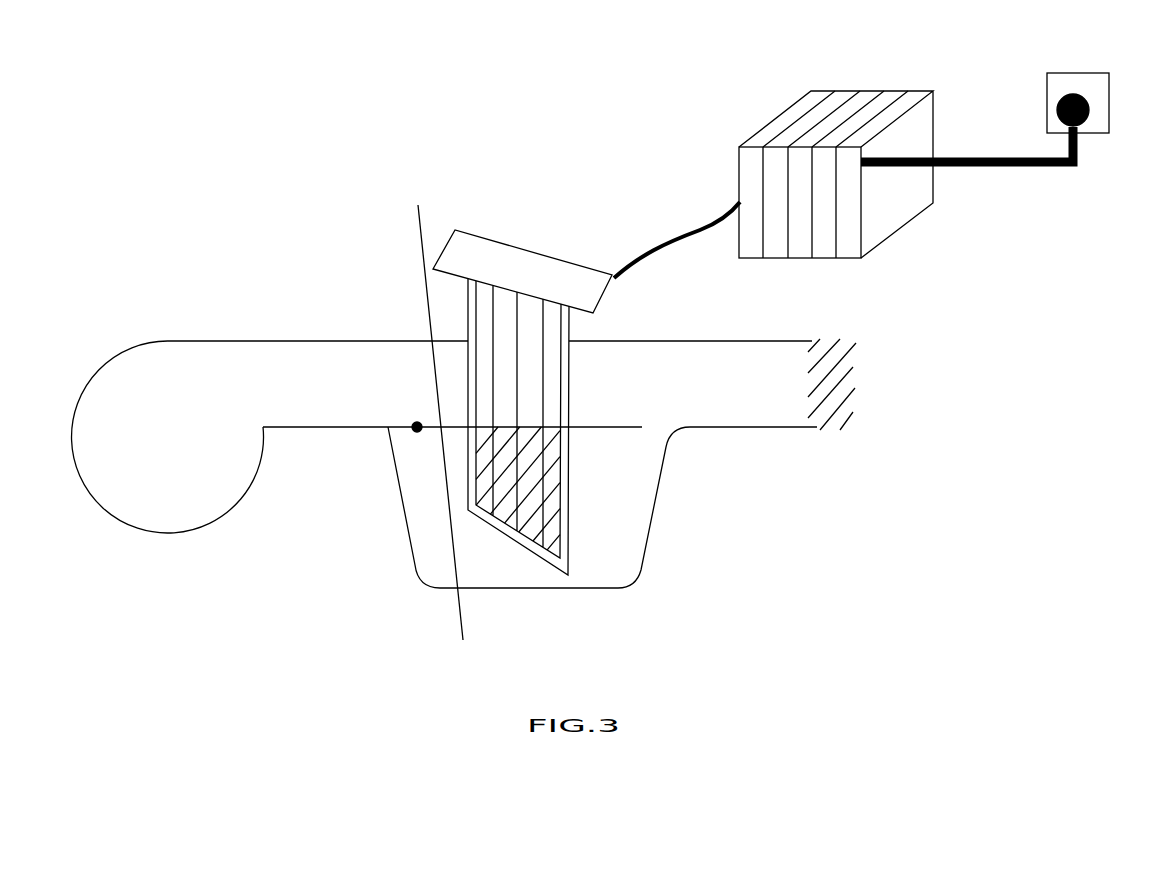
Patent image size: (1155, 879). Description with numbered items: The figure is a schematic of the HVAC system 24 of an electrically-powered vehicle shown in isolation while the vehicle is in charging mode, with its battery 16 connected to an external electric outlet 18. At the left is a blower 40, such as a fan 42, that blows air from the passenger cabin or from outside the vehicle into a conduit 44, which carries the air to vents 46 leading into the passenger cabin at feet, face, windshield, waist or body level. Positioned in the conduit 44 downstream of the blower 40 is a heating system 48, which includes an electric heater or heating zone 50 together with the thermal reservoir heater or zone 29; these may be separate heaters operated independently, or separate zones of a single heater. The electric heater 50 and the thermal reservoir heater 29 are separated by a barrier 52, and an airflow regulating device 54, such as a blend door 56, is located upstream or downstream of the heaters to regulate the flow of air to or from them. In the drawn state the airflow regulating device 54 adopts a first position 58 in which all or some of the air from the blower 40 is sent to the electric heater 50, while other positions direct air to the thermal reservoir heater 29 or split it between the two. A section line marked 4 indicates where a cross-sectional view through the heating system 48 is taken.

The section line 4- 4 is at (418, 205).
The battery 16 is at (860, 100).
The electric outlet 18 is at (1073, 73).
The HVAC system 24 is at (708, 66).
The thermal reservoir heater 29 is at (528, 482).
The blower 40 is at (158, 370).
The fan 42 is at (178, 372).
The conduit 44 is at (305, 343).
The vents 46 is at (848, 377).
The heating system 48 is at (598, 386).
The electric heater 50 is at (548, 368).
The barrier 52 is at (572, 428).
The airflow regulating device 54 is at (391, 430).
The blend door 56 is at (393, 427).
The first position 58 is at (409, 410).